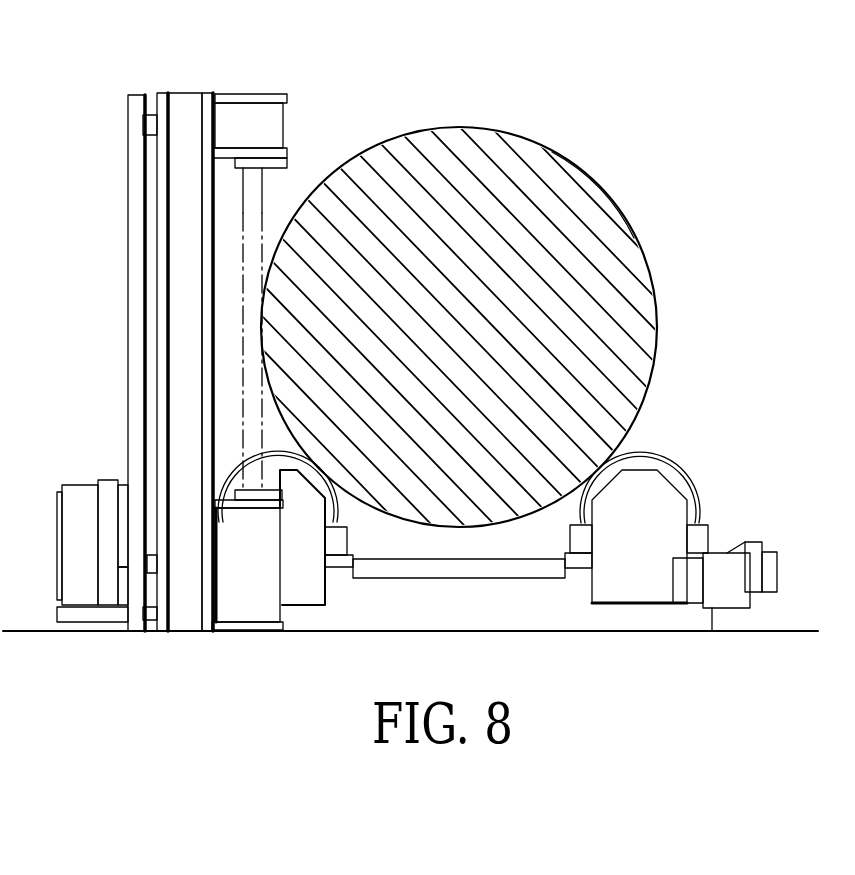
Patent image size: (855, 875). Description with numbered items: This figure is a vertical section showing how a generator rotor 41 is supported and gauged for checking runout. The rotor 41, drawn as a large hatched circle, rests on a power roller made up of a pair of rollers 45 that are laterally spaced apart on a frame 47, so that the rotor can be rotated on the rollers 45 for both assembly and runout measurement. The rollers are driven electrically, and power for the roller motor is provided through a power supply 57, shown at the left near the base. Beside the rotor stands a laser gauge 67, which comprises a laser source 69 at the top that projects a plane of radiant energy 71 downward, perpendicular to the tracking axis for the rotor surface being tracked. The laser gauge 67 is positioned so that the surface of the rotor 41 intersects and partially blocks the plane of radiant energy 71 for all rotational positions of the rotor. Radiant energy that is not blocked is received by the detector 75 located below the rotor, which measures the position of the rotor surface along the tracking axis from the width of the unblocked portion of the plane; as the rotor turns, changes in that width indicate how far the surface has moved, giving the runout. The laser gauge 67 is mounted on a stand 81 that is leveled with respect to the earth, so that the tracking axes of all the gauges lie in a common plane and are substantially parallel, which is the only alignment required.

The rotor 41 is at (631, 189).
The rollers 45 is at (282, 454).
The frame 47 is at (412, 580).
The power supply 57 is at (90, 485).
The laser gauge 67 is at (121, 124).
The laser source 69 is at (260, 112).
The plane of radiant energy 71 is at (263, 192).
The detector 75 is at (233, 605).
The stand 81 is at (173, 94).